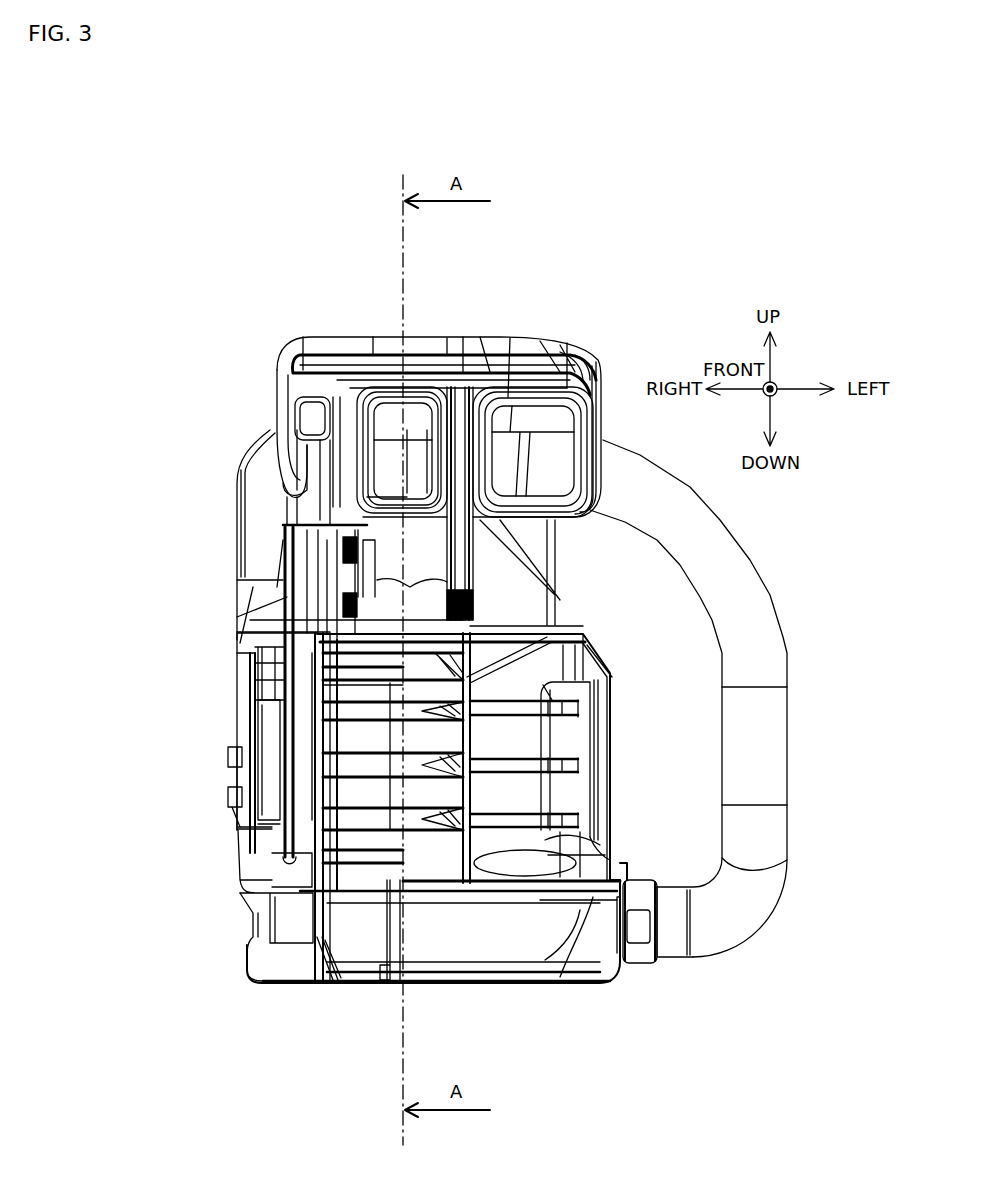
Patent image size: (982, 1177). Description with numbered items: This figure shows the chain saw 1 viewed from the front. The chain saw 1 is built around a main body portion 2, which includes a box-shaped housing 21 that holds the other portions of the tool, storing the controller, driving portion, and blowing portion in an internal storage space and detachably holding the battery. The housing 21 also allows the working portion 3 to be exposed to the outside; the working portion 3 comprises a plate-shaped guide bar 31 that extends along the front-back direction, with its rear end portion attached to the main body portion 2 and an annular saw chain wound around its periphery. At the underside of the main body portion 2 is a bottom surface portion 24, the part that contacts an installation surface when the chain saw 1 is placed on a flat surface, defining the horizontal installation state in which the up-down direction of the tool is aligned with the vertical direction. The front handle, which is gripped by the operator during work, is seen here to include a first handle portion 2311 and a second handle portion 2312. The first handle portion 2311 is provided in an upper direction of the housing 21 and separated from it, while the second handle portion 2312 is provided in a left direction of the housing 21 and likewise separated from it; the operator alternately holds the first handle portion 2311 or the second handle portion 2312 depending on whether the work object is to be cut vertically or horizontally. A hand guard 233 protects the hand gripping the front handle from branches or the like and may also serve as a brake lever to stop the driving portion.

The chain saw 1 is at (668, 288).
The main body portion 2 is at (606, 1010).
The working portion 3 is at (213, 775).
The housing 21 is at (524, 935).
The bottom surface portion 24 is at (372, 985).
The guide bar 31 is at (238, 742).
The hand guard 233 is at (568, 372).
The first handle portion 2311 is at (507, 397).
The second handle portion 2312 is at (790, 720).